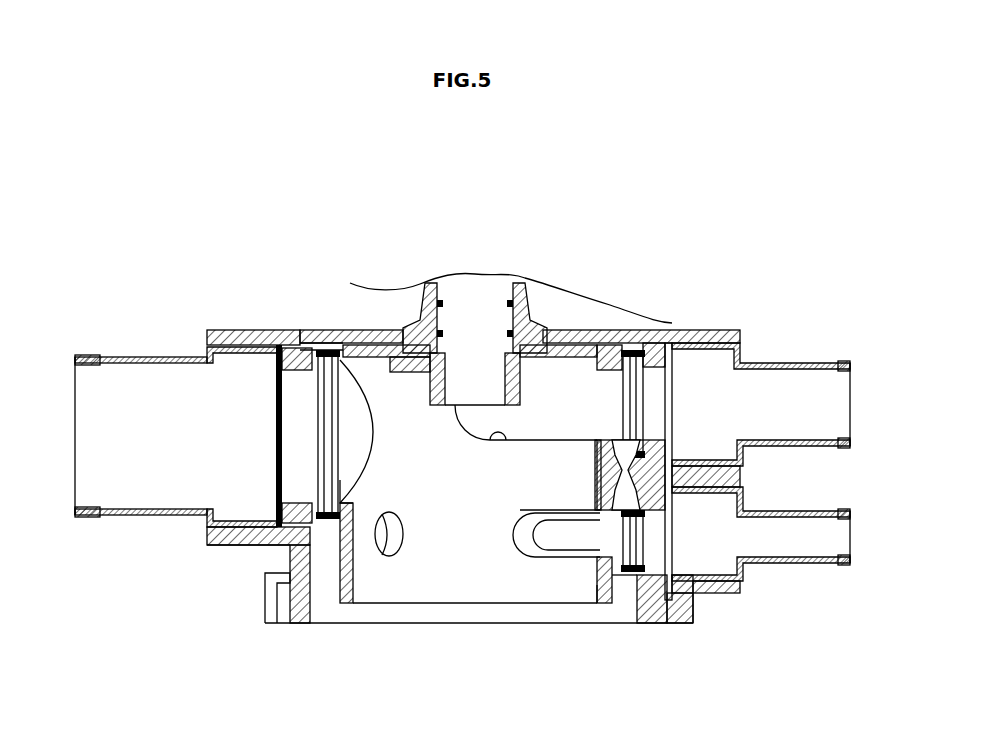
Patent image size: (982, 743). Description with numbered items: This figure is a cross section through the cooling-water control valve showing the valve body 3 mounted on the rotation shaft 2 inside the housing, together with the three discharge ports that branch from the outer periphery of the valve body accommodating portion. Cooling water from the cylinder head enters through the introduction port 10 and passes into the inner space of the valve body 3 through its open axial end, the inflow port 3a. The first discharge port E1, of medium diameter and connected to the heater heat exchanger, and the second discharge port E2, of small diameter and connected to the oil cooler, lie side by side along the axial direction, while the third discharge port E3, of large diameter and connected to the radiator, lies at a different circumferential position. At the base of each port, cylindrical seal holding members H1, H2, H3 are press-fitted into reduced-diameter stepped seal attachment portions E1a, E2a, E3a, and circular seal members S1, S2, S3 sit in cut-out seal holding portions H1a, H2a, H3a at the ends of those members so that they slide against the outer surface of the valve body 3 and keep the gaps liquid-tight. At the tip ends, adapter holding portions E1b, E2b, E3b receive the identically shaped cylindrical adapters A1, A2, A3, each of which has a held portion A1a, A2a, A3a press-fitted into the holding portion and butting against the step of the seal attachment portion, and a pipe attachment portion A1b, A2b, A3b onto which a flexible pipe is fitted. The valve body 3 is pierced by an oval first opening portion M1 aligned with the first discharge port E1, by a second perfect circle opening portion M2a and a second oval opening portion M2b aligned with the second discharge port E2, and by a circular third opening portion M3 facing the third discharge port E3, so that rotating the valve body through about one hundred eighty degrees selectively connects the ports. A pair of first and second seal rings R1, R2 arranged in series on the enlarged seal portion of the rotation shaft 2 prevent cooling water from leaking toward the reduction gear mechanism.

The rotation shaft 2 is at (476, 300).
The valve body 3 is at (570, 320).
The inflow port 3a is at (590, 582).
The introduction port 10 is at (645, 592).
The first seal ring R1 is at (420, 323).
The second seal ring R2 is at (433, 302).
The first adapter A1 is at (761, 333).
The first held portion A1a is at (731, 347).
The first pipe attachment portion A1b is at (781, 362).
The second adapter A2 is at (761, 603).
The second held portion A2a is at (733, 594).
The second pipe attachment portion A2b is at (785, 567).
The third adapter A3 is at (192, 372).
The third held portion A3a is at (254, 393).
The third pipe attachment portion A3b is at (164, 358).
The first seal holding member H1 is at (646, 332).
The first seal holding portion H1a is at (600, 348).
The second seal holding member H2 is at (648, 575).
The second seal holding portion H2a is at (598, 600).
The third seal holding member H3 is at (291, 345).
The third seal holding portion H3a is at (313, 350).
The first discharge port E1 is at (628, 403).
The first seal attachment portion E1a is at (668, 447).
The first adapter holding portion E1b is at (697, 352).
The second discharge port E2 is at (628, 538).
The second seal attachment portion E2a is at (668, 560).
The second adapter holding portion E2b is at (703, 595).
The third discharge port E3 is at (340, 416).
The third seal attachment portion E3a is at (262, 545).
The third adapter holding portion E3b is at (240, 540).
The first seal member S1 is at (597, 450).
The second seal member S2 is at (597, 500).
The third seal member S3 is at (327, 537).
The first opening portion M1 is at (496, 442).
The second perfect circle opening portion M2a is at (402, 546).
The second oval opening portion M2b is at (543, 558).
The third opening portion M3 is at (367, 490).